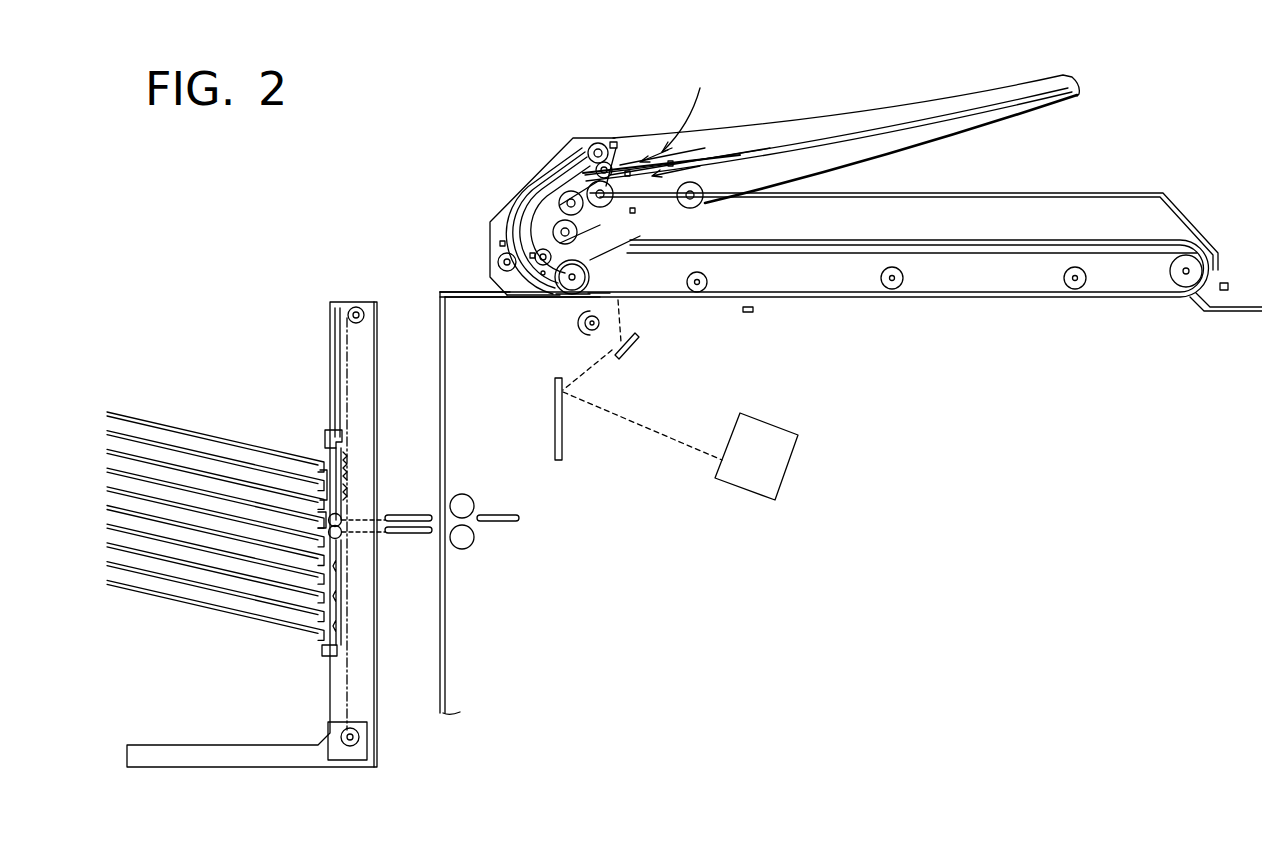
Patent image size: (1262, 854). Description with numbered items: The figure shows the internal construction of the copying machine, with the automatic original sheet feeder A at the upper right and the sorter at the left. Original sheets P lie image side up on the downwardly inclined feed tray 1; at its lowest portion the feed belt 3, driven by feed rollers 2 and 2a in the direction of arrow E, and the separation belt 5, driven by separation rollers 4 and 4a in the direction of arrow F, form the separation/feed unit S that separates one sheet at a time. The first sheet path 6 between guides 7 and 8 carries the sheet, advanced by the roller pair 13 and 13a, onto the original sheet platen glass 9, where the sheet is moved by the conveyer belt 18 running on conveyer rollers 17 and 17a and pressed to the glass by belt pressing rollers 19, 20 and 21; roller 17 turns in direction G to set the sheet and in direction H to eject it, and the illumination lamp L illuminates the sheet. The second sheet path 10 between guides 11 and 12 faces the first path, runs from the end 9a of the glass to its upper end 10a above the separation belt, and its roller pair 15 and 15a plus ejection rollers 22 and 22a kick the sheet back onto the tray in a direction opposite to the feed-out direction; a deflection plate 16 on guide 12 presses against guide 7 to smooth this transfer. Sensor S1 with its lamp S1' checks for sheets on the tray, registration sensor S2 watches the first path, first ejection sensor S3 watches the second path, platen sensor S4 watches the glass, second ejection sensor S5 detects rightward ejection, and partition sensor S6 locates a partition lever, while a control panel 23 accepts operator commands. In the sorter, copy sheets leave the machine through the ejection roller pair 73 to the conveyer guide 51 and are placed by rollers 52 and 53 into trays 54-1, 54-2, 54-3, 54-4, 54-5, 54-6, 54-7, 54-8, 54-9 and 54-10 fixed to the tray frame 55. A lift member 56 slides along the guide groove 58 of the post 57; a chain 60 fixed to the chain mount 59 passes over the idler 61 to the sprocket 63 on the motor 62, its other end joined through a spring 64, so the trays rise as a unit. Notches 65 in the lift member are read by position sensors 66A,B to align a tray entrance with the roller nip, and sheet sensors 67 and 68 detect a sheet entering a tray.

The feed tray 1 is at (866, 135).
The feed roller 2 is at (580, 240).
The feed roller 2a is at (705, 205).
The feed belt 3 is at (702, 201).
The separation roller 4 is at (590, 190).
The separation roller 4a is at (560, 195).
The separation belt 5 is at (568, 180).
The first sheet path 6 is at (505, 240).
The guide 7 is at (499, 265).
The guide 8 is at (512, 252).
The original sheet platen glass 9 is at (675, 300).
The end of the platen glass 9a is at (562, 293).
The second sheet path 10 is at (520, 212).
The upper end of the second sheet path 10a is at (648, 150).
The guide 11 is at (538, 250).
The guide 12 is at (563, 187).
The sheet feed roller 13 is at (535, 291).
The sheet feed roller 13a is at (530, 293).
The sheet feed roller 15 is at (495, 287).
The sheet feed roller 15a is at (520, 291).
The deflection plate 16 is at (550, 291).
The original sheet conveyer roller 17 is at (582, 294).
The original sheet conveyer roller 17a is at (1190, 288).
The original sheet conveyer belt 18 is at (832, 255).
The belt pressing roller 19 is at (700, 293).
The belt pressing roller 20 is at (903, 286).
The belt pressing roller 21 is at (1083, 289).
The ejection roller 22 is at (598, 143).
The ejection roller 22a is at (615, 162).
The control panel 23 is at (606, 162).
The conveyer guide 51 is at (343, 536).
The roller 52 is at (350, 548).
The roller 53 is at (342, 519).
The tray 54-1 is at (293, 630).
The tray 54-2 is at (242, 598).
The tray 54-3 is at (176, 562).
The tray 54-4 is at (138, 533).
The tray 54-5 is at (107, 508).
The tray 54-6 is at (203, 509).
The tray 54-7 is at (168, 482).
The tray 54-8 is at (152, 458).
The tray 54-9 is at (138, 436).
The tray 54-10 is at (107, 410).
The tray frame 55 is at (337, 446).
The lift member 56 is at (342, 434).
The post 57 is at (378, 302).
The guide groove 58 is at (334, 340).
The chain mount 59 is at (345, 462).
The chain 60 is at (348, 360).
The idler 61 is at (357, 306).
The motor 62 is at (367, 750).
The sprocket 63 is at (356, 730).
The spring 64 is at (345, 480).
The notches 65 is at (345, 585).
The position sensors 66A,B is at (340, 540).
The sheet sensor light emitter 67 is at (327, 497).
The sheet sensor photo-sensor 68 is at (322, 518).
The ejection roller pair 73 is at (462, 494).
The automatic original sheet feeder A is at (575, 133).
The separation/feed unit S is at (712, 88).
The original sheets P is at (840, 147).
The arrow E is at (585, 220).
The arrow F is at (605, 240).
The arrow G is at (570, 297).
The arrow H is at (628, 336).
The illumination lamp L is at (596, 333).
The original sheet sensor S1 is at (658, 252).
The lamp S1' is at (672, 206).
The registration sensor S2 is at (543, 286).
The first ejection sensor S3 is at (499, 245).
The platen sensor S4 is at (748, 313).
The second ejection sensor S5 is at (1228, 285).
The partition sensor S6 is at (685, 158).